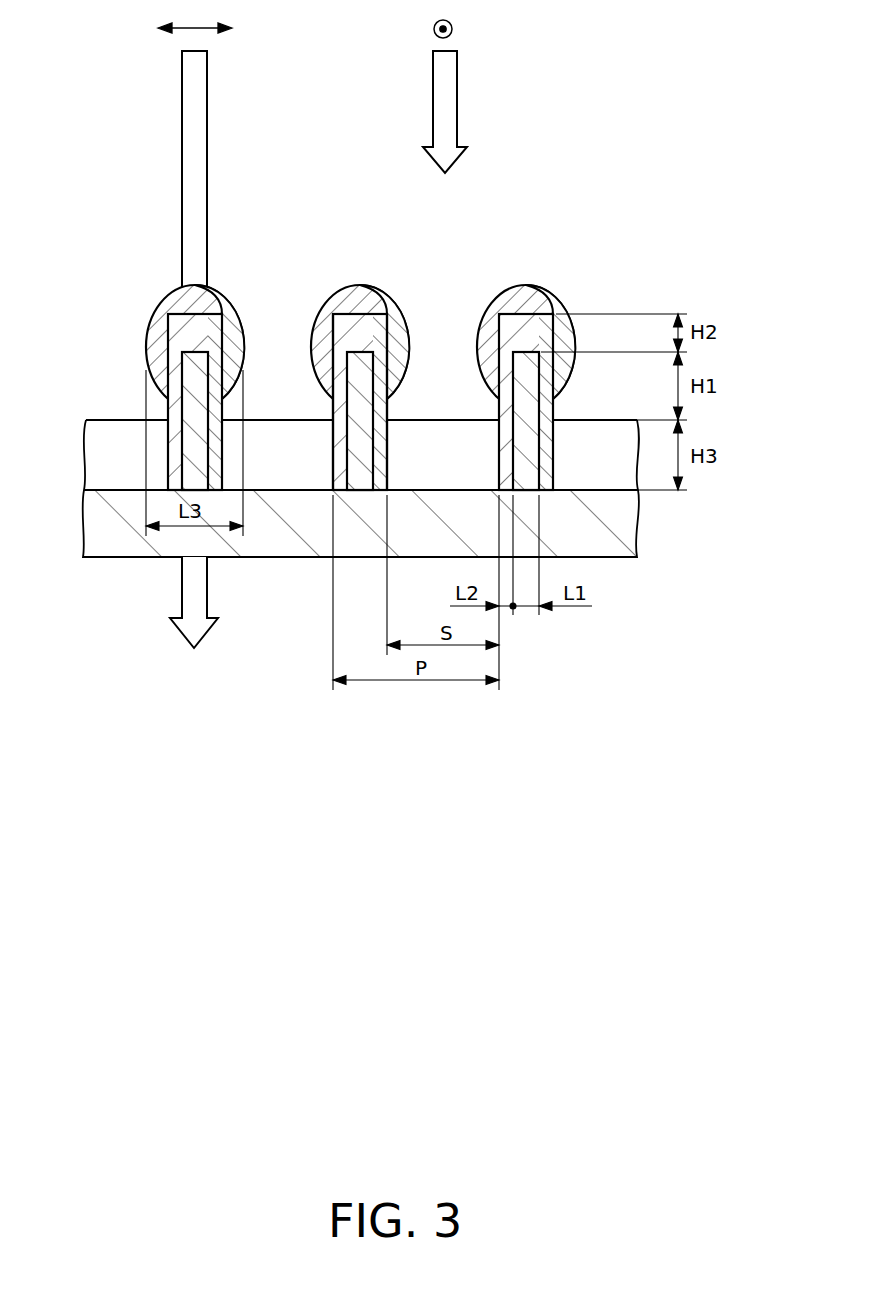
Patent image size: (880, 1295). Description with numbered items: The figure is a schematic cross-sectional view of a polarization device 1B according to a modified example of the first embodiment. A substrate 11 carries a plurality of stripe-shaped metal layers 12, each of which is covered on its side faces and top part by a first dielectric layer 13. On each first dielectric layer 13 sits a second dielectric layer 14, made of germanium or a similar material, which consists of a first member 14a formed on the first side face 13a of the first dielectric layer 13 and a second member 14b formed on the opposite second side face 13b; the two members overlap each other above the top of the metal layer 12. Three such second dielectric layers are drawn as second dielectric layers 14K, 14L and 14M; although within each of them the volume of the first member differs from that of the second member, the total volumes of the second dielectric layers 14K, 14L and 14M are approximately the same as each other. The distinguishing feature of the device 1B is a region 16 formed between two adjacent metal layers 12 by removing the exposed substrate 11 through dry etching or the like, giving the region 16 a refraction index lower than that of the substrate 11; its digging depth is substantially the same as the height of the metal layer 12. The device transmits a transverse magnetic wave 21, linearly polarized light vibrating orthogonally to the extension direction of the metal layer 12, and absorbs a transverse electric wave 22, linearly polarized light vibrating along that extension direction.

The polarization device 1B is at (645, 225).
The substrate 11 is at (630, 527).
The metal layer 12 is at (191, 365).
The first dielectric layer 13 is at (177, 335).
The first side face of the first dielectric layer 13a is at (325, 360).
The second side face of the first dielectric layer 13b is at (398, 353).
The second dielectric layer 14 is at (164, 300).
The second dielectric layer 14K is at (189, 339).
The second dielectric layer 14L is at (357, 339).
The second dielectric layer 14M is at (580, 232).
The first member 14a is at (336, 292).
The second member 14b is at (381, 297).
The region 16 is at (446, 476).
The transverse magnetic (TM) wave 21 is at (188, 93).
The transverse electric (TE) wave 22 is at (446, 90).